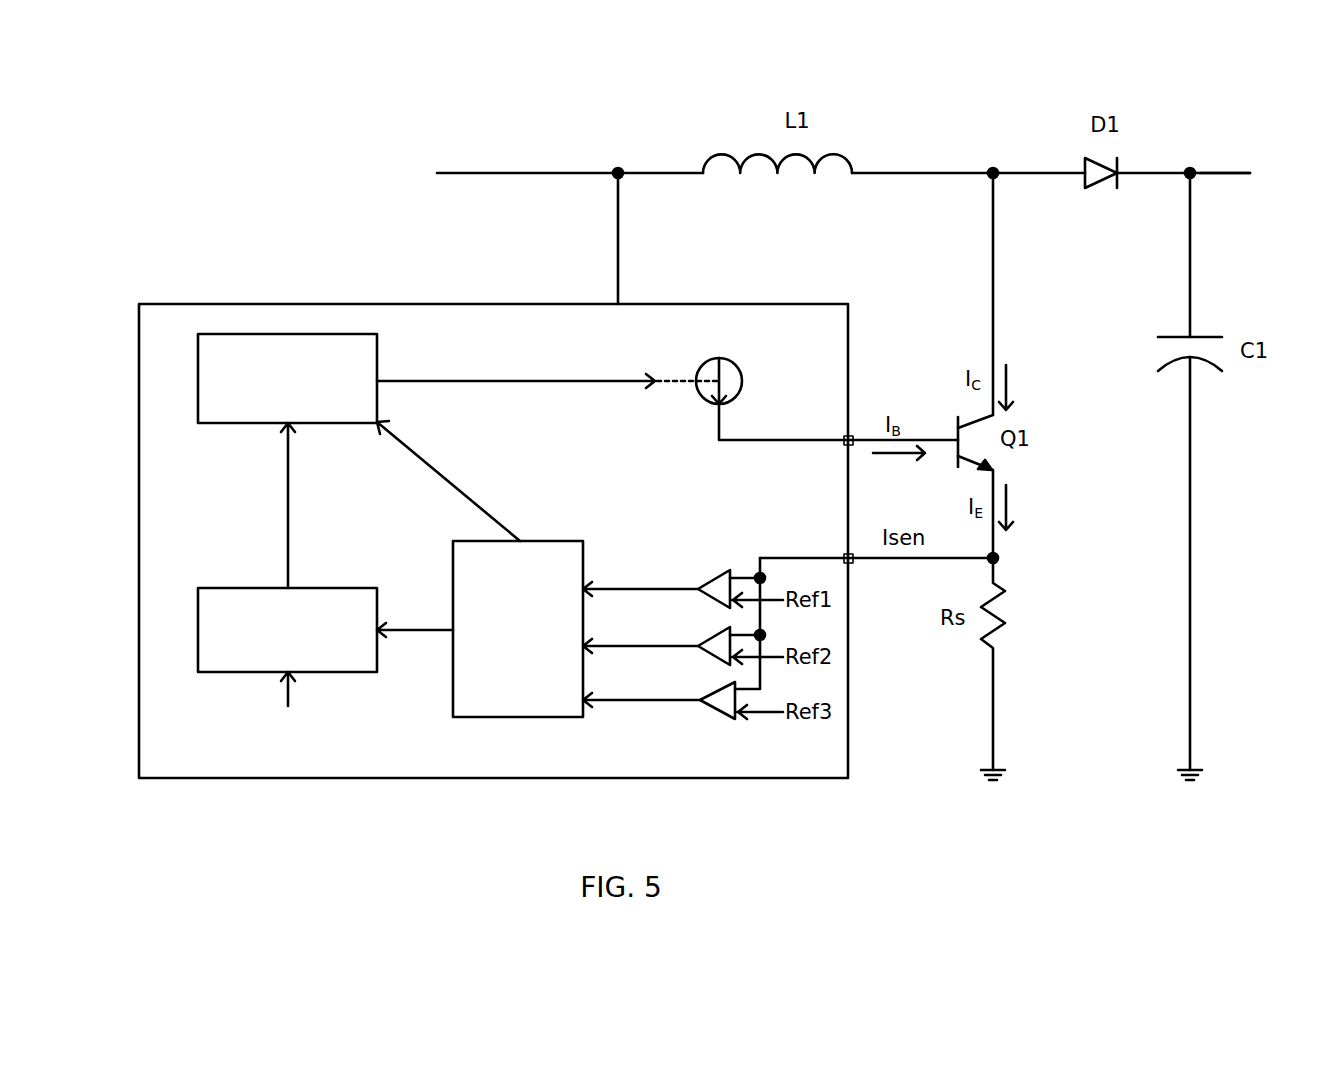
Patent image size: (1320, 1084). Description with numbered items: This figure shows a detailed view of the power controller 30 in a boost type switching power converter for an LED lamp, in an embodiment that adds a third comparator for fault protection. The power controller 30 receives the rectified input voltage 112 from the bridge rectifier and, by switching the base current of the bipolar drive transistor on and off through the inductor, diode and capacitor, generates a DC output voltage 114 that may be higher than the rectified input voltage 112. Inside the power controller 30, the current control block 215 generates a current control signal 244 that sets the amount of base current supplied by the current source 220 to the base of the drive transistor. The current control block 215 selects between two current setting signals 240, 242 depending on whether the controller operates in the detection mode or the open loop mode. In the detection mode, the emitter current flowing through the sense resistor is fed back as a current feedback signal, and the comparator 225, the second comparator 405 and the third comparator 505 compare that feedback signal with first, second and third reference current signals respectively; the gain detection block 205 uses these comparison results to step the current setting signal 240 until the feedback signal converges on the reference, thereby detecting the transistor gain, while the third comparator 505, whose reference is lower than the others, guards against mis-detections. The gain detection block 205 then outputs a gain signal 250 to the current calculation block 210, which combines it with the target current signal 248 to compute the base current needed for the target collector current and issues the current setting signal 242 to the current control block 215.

The power controller 30 is at (225, 304).
The rectified input voltage 112 is at (536, 173).
The DC output voltage 114 is at (1240, 173).
The current control block 215 is at (287, 378).
The current calculation block 210 is at (287, 630).
The gain detection block 205 is at (518, 629).
The current source 220 is at (772, 384).
The comparator 225 is at (683, 583).
The second comparator 405 is at (683, 640).
The third comparator 505 is at (683, 695).
The current setting signal 240 is at (456, 486).
The current setting signal 242 is at (288, 532).
The current control signal 244 is at (507, 381).
The target current signal 248 is at (288, 700).
The gain signal 250 is at (433, 631).